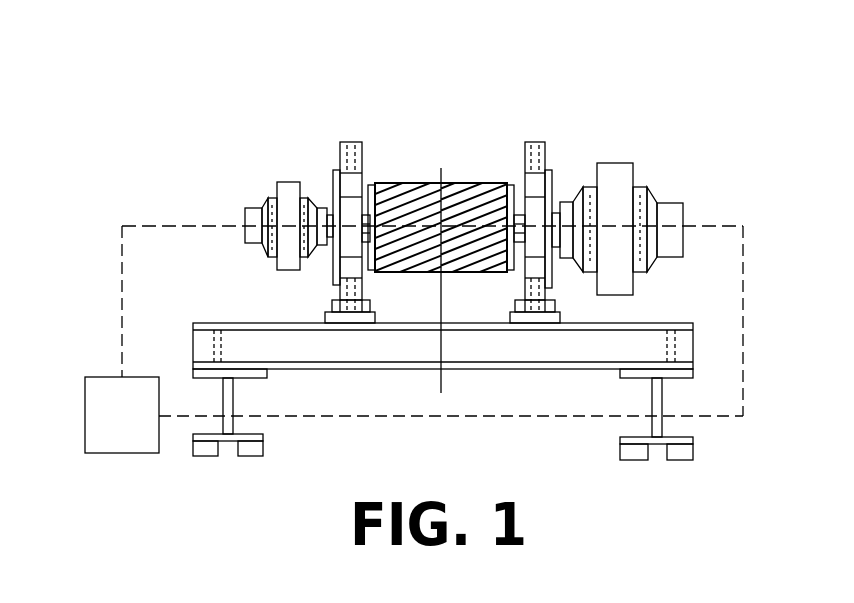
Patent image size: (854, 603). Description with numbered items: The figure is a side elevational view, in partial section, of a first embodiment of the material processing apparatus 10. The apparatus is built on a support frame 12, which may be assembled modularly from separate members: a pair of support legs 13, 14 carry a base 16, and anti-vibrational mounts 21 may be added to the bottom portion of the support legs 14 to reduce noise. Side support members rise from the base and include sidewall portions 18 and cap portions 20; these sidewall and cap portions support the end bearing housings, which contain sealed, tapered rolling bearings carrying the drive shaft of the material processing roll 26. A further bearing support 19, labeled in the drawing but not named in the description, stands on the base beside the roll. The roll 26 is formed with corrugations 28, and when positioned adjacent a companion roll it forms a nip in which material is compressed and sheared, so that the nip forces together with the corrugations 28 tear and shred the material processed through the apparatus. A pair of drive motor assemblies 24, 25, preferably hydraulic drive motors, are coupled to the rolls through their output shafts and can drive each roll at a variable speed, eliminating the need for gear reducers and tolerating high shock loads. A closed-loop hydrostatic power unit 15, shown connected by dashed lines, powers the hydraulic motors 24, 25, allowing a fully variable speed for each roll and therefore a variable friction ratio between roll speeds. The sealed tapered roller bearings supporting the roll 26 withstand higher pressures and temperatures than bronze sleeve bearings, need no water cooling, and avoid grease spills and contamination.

The material processing apparatus 10 is at (276, 90).
The support frame 12 is at (553, 203).
The support leg 13 is at (223, 400).
The support leg 14 is at (662, 413).
The closed-loop hydrostatic power unit 15 is at (100, 377).
The base 16 is at (693, 357).
The sidewall portion 18 is at (332, 272).
The left bearing pedestal 19 is at (340, 150).
The cap portion 20 is at (547, 155).
The anti-vibrational mount 21 is at (693, 452).
The drive motor assembly 24 is at (275, 193).
The drive motor assembly 25 is at (653, 197).
The roll 26 is at (485, 182).
The corrugations 28 is at (407, 182).